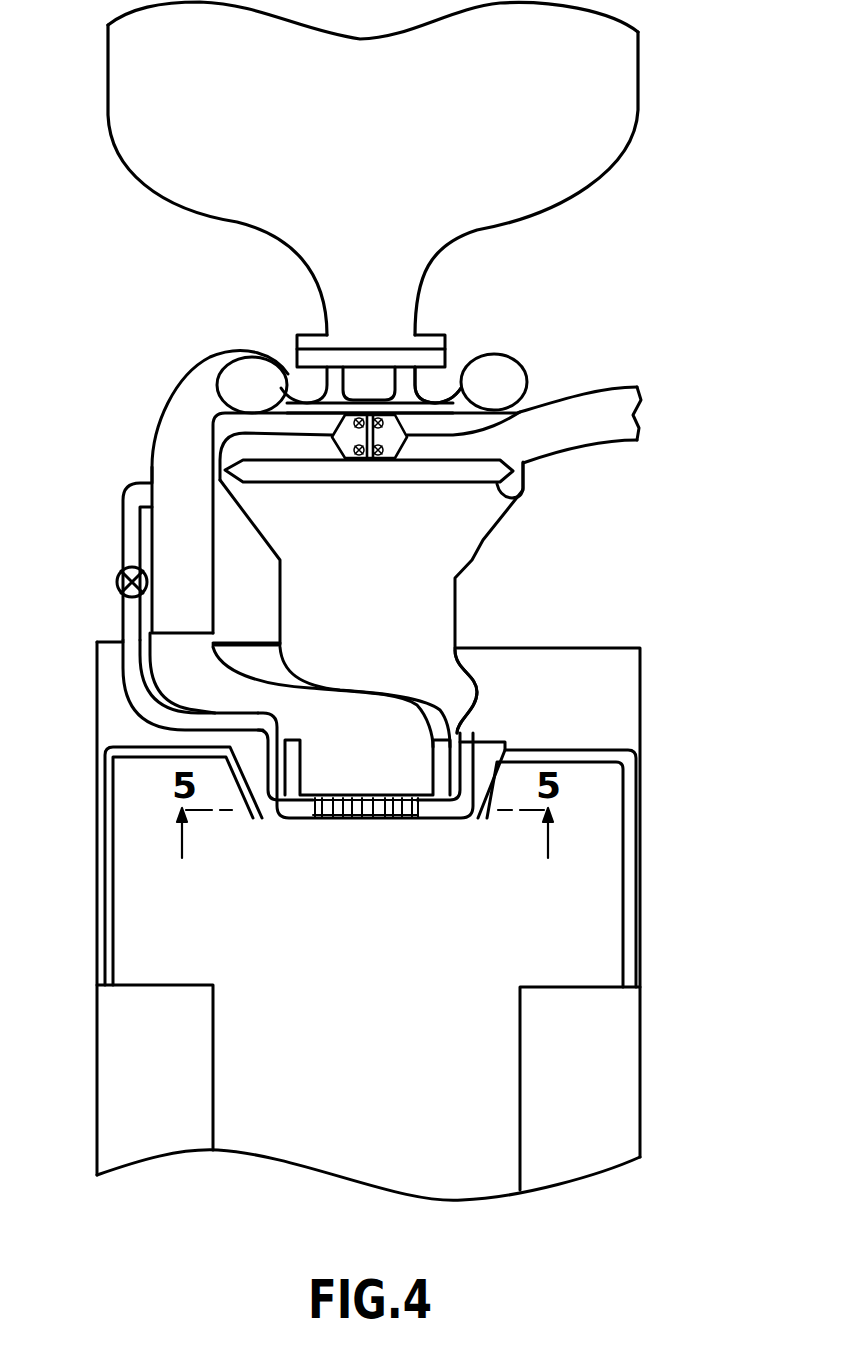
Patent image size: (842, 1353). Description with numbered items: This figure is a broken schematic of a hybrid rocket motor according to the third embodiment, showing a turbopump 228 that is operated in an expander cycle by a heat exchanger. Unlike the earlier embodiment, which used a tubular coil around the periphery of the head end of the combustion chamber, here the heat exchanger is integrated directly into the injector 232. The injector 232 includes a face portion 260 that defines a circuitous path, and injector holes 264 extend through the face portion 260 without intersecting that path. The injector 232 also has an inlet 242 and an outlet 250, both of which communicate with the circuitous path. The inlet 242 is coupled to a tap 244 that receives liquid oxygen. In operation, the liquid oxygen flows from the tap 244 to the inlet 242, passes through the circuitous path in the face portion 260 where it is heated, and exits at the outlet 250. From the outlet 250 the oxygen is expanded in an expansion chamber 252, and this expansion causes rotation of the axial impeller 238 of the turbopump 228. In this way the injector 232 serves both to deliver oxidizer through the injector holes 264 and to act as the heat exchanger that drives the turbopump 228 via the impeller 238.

The turbopump 228 is at (430, 392).
The axial impeller 238 is at (497, 473).
The tap 244 is at (122, 553).
The expansion chamber 252 is at (433, 637).
The outlet 250 is at (463, 733).
The inlet 242 is at (277, 727).
The injector 232 is at (302, 775).
The face portion 260 is at (298, 823).
The injector holes 264 is at (358, 822).